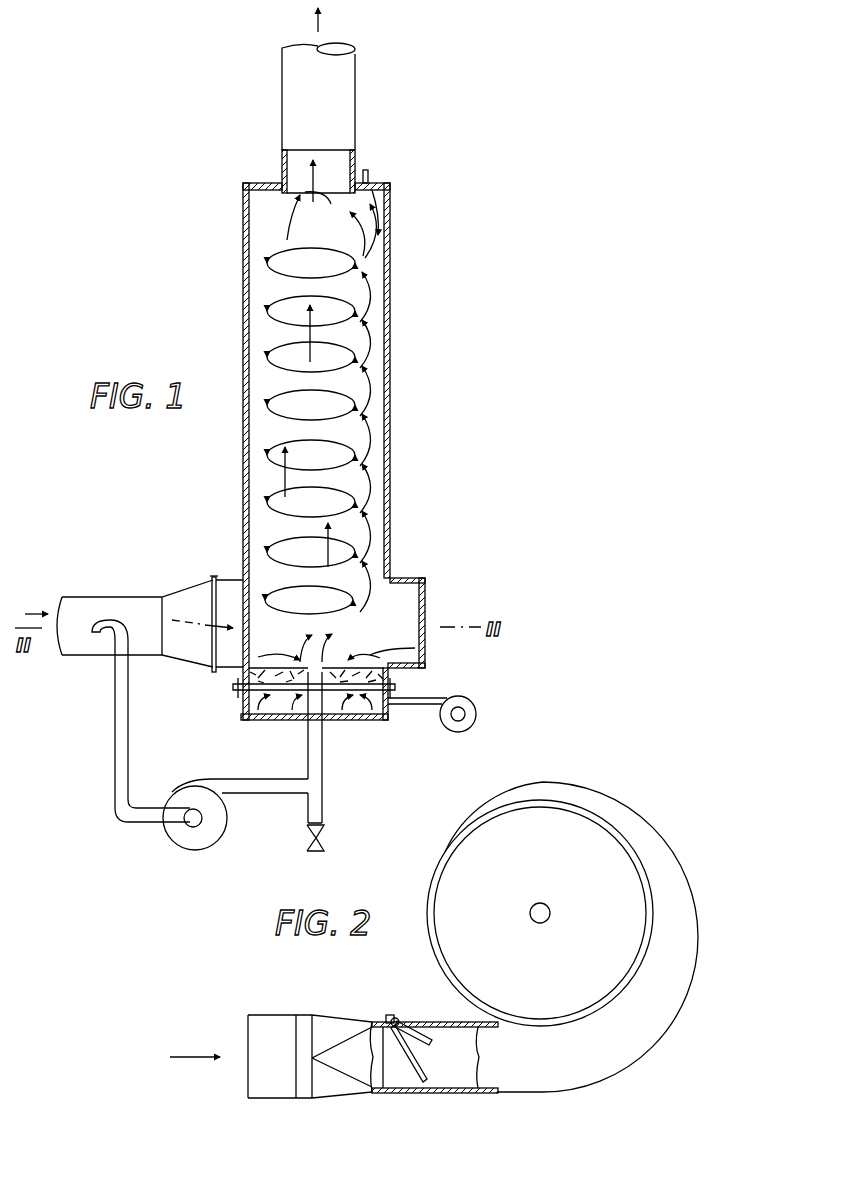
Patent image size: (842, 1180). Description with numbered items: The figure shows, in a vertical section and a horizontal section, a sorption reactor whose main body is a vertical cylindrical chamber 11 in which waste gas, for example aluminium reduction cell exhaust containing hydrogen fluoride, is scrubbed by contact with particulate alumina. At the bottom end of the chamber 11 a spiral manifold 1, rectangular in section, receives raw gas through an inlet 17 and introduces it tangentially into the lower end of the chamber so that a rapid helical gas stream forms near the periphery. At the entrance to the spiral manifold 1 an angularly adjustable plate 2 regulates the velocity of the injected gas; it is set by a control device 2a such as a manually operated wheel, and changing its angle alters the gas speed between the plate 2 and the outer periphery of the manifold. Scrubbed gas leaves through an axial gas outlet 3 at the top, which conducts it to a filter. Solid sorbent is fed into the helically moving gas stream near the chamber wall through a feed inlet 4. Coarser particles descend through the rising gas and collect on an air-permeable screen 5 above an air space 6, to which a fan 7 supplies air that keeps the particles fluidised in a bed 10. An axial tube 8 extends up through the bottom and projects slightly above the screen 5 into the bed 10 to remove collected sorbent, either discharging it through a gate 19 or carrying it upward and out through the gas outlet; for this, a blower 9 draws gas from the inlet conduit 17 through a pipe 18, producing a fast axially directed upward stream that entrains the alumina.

In FIG. 1, the spiral manifold 1 is at (422, 578).
In FIG. 2, the spiral manifold 1 is at (672, 1028).
In FIG. 1, the angularly adjustable plate 2 is at (222, 612).
In FIG. 2, the angularly adjustable plate 2 is at (420, 1064).
In FIG. 1, the control device 2a is at (214, 578).
In FIG. 2, the control device 2a is at (394, 1017).
In FIG. 1, the axial gas outlet 3 is at (282, 108).
In FIG. 1, the feed inlet 4 is at (370, 176).
In FIG. 1, the air-permeable screen 5 is at (415, 648).
In FIG. 1, the air space 6 is at (356, 716).
In FIG. 1, the fan 7 is at (462, 700).
In FIG. 1, the axial tube 8 is at (300, 698).
In FIG. 1, the blower 9 is at (195, 850).
In FIG. 1, the fluidised bed 10 is at (242, 681).
In FIG. 1, the vertical cylindrical chamber 11 is at (243, 263).
In FIG. 1, the inlet 17 is at (76, 598).
In FIG. 2, the inlet 17 is at (272, 1014).
In FIG. 1, the pipe 18 is at (106, 615).
In FIG. 1, the gate 19 is at (326, 838).